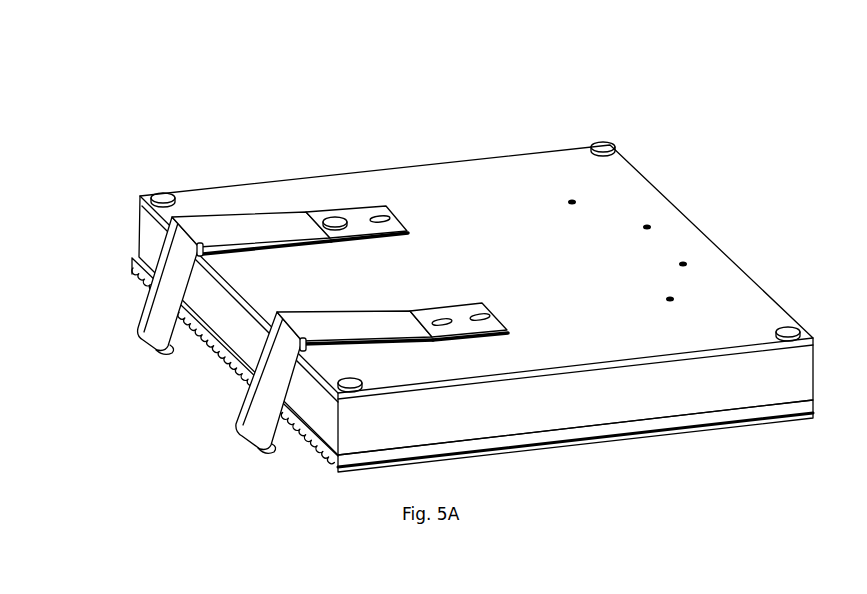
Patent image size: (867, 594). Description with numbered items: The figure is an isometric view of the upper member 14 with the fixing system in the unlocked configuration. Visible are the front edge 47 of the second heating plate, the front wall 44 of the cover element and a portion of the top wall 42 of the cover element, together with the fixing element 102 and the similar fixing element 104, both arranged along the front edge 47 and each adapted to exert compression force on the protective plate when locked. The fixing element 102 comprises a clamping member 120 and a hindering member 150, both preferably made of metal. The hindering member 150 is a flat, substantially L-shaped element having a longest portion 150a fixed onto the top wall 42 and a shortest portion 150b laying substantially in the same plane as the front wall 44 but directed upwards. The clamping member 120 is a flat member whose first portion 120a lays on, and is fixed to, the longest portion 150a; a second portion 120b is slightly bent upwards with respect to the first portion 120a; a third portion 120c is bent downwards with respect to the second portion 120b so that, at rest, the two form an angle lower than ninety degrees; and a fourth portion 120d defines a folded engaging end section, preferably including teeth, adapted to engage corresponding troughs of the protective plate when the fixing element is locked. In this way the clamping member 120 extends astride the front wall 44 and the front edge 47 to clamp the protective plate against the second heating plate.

The upper member 14 is at (414, 304).
The fixing element 102 is at (422, 341).
The top wall of the cover element 42 is at (648, 210).
The front wall of the cover element 44 is at (320, 412).
The front edge of the second heating plate 47 is at (320, 458).
The clamping member 120 is at (212, 264).
The first portion of the clamping member 120a is at (358, 215).
The second portion of the clamping member 120b is at (238, 232).
The third portion of the clamping member 120c is at (155, 313).
The fourth portion of the clamping member 120d is at (172, 356).
The hindering member 150 is at (289, 202).
The longest portion of the hindering member 150a is at (277, 254).
The shortest portion of the hindering member 150b is at (203, 248).
The fixing element 104 is at (228, 445).